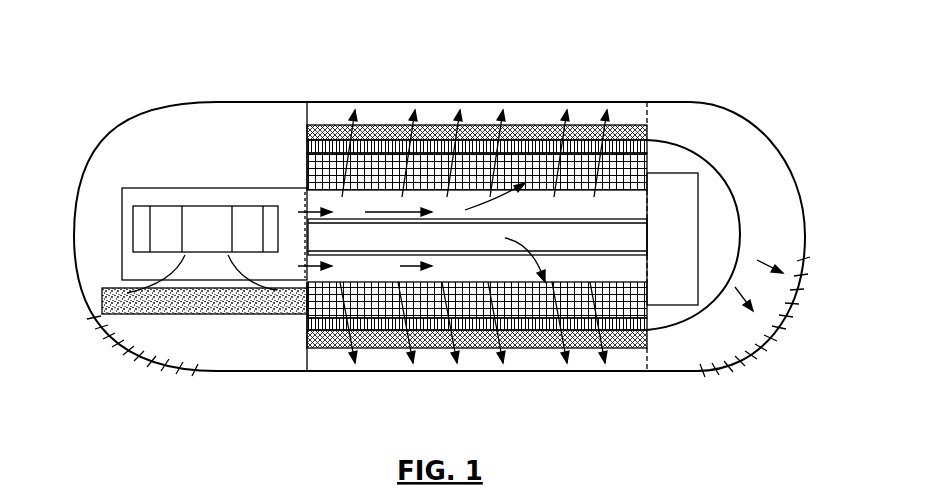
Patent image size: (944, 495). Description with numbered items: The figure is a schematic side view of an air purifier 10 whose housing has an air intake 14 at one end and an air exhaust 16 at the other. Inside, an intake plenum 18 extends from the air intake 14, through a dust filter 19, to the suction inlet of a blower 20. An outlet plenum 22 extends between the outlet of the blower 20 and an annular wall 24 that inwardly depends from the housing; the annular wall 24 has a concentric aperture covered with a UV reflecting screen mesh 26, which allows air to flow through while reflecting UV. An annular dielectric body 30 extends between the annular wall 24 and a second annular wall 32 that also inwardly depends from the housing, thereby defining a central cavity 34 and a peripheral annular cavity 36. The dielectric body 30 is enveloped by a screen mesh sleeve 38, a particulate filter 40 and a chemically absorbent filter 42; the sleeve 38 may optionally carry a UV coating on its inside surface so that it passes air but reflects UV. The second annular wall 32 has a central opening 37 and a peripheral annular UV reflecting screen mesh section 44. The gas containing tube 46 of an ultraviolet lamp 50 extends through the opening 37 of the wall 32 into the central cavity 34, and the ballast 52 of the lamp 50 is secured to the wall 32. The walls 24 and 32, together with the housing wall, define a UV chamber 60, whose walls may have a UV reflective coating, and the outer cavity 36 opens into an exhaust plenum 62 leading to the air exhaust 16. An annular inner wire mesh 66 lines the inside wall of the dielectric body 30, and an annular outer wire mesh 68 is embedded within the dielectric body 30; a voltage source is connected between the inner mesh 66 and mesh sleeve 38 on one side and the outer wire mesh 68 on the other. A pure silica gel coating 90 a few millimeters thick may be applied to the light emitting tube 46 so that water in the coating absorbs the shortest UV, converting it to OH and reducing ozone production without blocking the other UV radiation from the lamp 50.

The air purifier 10 is at (104, 120).
The air intake 14 is at (128, 373).
The air exhaust 16 is at (821, 281).
The intake plenum 18 is at (203, 280).
The dust filter 19 is at (100, 296).
The blower 20 is at (205, 229).
The outlet plenum 22 is at (280, 278).
The annular wall 24 is at (332, 350).
The UV reflecting screen mesh 26 is at (312, 192).
The annular dielectric body 30 is at (482, 352).
The second annular wall 32 is at (648, 322).
The central cavity 34 is at (477, 186).
The peripheral annular cavity 36 is at (374, 112).
The central opening 37 is at (645, 233).
The screen mesh sleeve 38 is at (623, 353).
The particulate filter 40 is at (527, 147).
The chemically absorbent filter 42 is at (478, 122).
The peripheral annular UV reflecting screen mesh section 44 is at (650, 360).
The gas containing tube 46 is at (477, 237).
The ultraviolet lamp 50 is at (664, 162).
The ballast 52 is at (683, 208).
The UV chamber 60 is at (435, 112).
The exhaust plenum 62 is at (730, 148).
The annular inner wire mesh 66 is at (510, 251).
The annular outer wire mesh 68 is at (543, 130).
The pure silica gel coating 90 is at (447, 218).